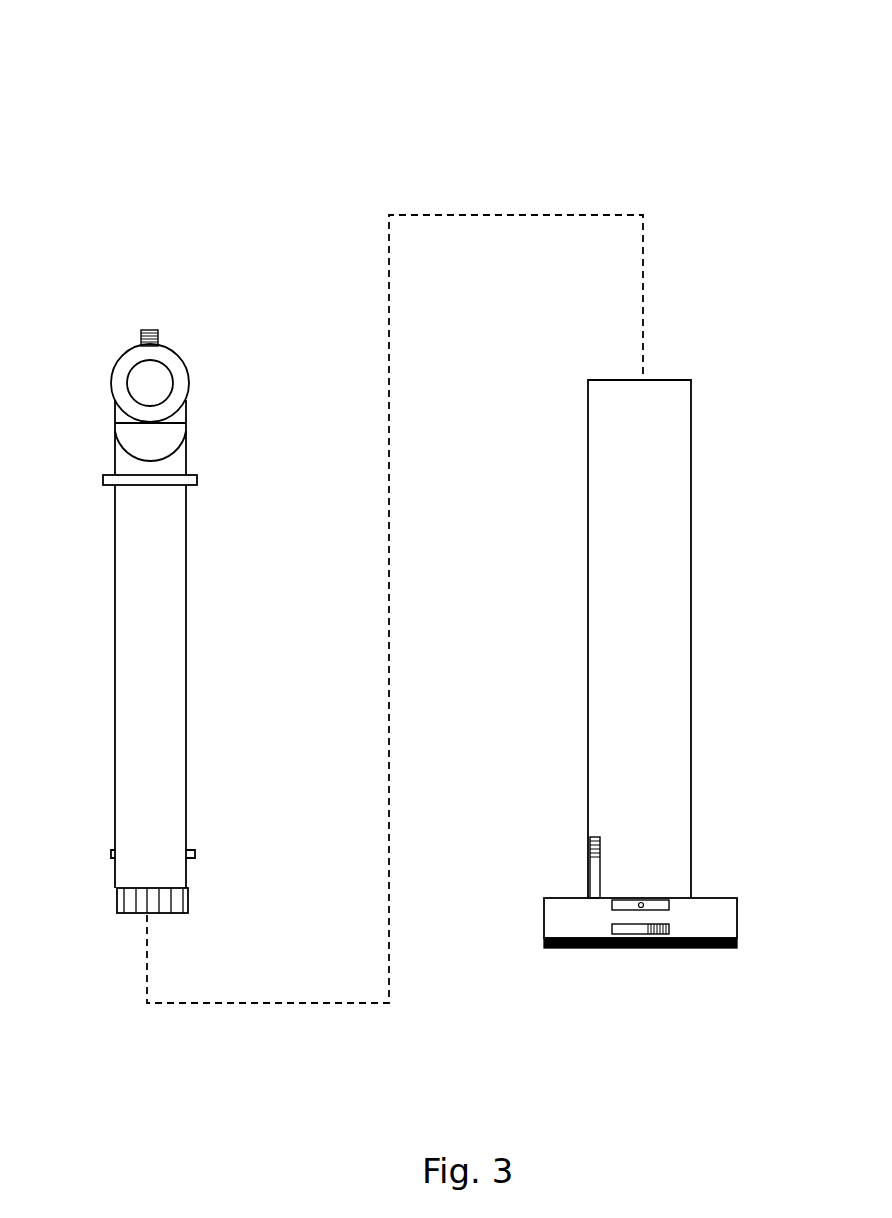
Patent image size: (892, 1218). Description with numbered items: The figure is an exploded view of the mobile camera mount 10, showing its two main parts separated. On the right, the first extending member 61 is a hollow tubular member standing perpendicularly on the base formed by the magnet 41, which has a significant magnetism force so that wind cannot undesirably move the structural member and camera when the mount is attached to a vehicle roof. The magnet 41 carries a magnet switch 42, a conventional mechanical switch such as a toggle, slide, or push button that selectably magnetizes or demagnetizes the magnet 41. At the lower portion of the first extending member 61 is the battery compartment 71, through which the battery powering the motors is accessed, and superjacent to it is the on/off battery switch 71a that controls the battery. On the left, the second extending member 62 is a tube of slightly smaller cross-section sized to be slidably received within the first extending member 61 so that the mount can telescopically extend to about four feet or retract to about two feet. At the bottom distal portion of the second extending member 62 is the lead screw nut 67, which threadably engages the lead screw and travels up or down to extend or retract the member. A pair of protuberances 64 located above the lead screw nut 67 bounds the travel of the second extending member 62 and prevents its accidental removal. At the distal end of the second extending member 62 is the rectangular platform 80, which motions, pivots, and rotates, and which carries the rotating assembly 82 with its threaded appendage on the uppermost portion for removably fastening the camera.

The mobile camera mount 10 is at (98, 106).
The rotating assembly 82 is at (104, 403).
The platform 80 is at (196, 477).
The second extending member 62 is at (152, 635).
The protuberances 64 is at (117, 883).
The lead screw nut 67 is at (141, 900).
The first extending member 61 is at (671, 532).
The on/off battery switch 71a is at (591, 842).
The battery compartment 71 is at (648, 906).
The magnet switch 42 is at (670, 925).
The magnet 41 is at (667, 948).